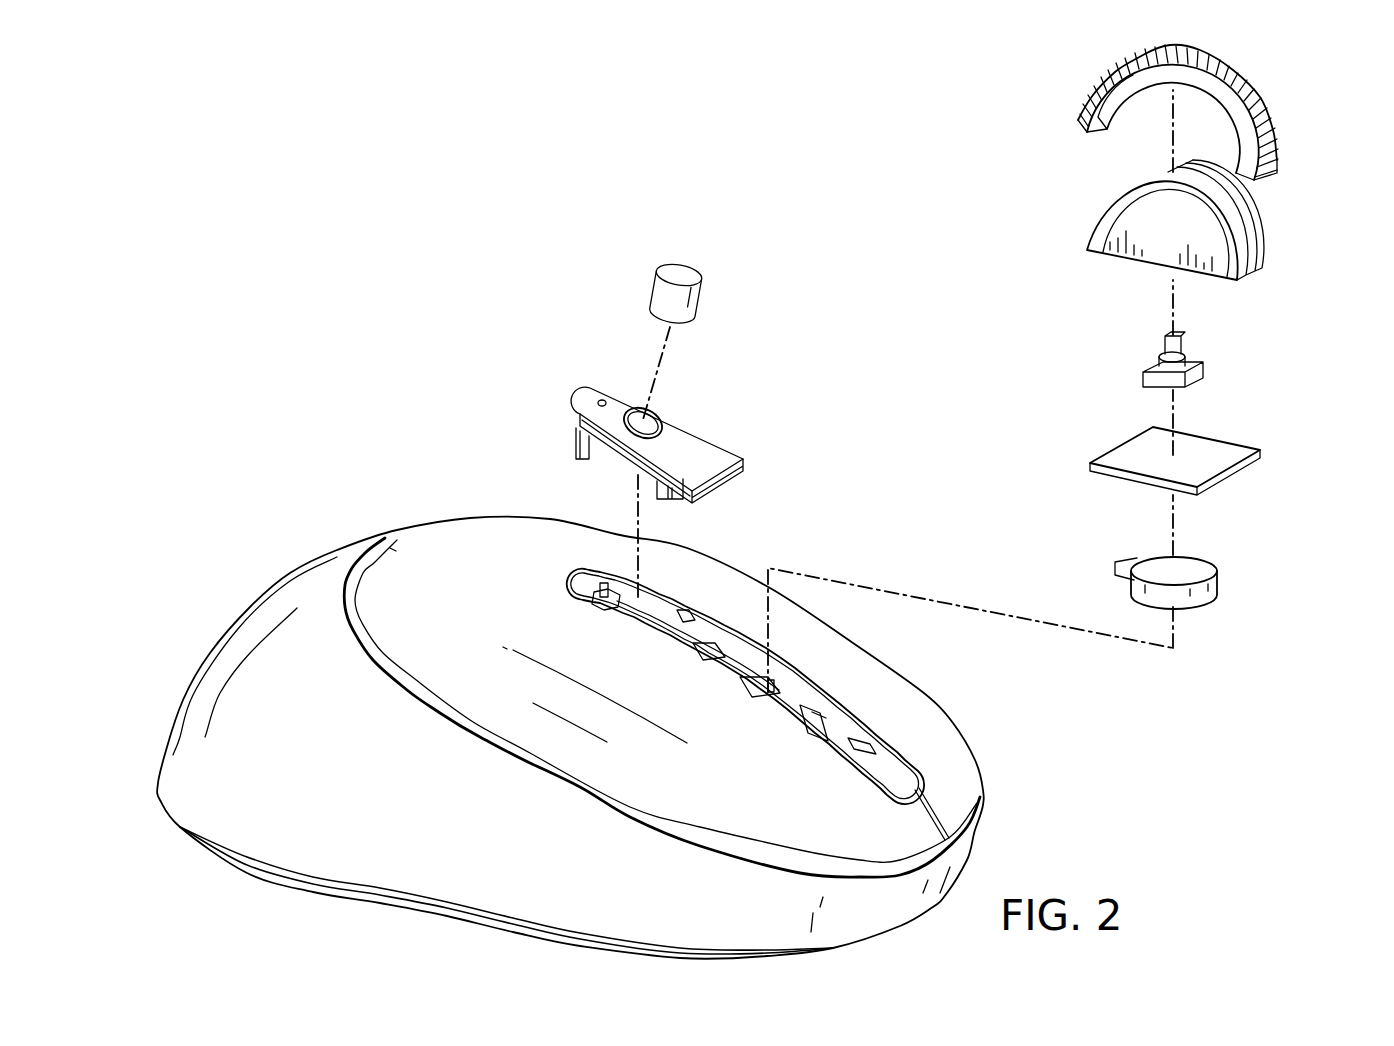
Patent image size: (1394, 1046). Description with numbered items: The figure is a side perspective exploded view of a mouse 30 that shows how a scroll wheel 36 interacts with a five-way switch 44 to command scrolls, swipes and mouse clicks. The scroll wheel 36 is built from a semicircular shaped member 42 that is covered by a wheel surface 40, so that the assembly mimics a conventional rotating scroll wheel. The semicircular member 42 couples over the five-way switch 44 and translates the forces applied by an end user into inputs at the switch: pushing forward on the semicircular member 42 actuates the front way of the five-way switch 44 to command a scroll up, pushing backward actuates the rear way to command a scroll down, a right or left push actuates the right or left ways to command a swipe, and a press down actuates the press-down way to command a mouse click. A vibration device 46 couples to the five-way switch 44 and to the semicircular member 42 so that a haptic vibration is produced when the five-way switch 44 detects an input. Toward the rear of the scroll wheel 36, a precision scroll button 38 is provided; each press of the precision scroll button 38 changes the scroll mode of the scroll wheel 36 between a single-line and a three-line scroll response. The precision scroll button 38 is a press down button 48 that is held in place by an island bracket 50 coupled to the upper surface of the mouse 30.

The mouse 30 is at (1264, 774).
The scroll wheel 36 is at (1330, 42).
The precision scroll button 38 is at (761, 262).
The wheel surface 40 is at (1253, 82).
The semicircular shaped member 42 is at (1255, 222).
The five-way switch 44 is at (1263, 452).
The vibration device 46 is at (1219, 584).
The press down button 48 is at (659, 288).
The island bracket 50 is at (573, 416).